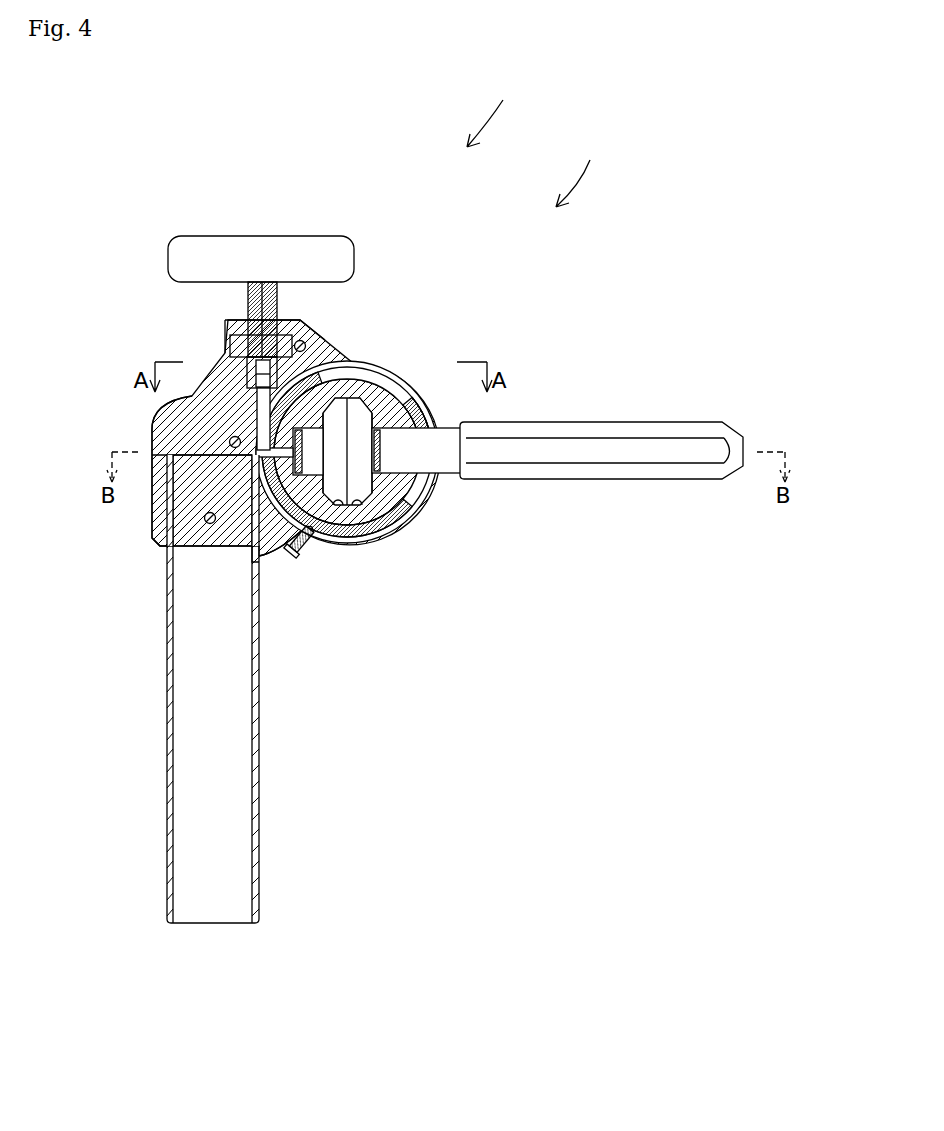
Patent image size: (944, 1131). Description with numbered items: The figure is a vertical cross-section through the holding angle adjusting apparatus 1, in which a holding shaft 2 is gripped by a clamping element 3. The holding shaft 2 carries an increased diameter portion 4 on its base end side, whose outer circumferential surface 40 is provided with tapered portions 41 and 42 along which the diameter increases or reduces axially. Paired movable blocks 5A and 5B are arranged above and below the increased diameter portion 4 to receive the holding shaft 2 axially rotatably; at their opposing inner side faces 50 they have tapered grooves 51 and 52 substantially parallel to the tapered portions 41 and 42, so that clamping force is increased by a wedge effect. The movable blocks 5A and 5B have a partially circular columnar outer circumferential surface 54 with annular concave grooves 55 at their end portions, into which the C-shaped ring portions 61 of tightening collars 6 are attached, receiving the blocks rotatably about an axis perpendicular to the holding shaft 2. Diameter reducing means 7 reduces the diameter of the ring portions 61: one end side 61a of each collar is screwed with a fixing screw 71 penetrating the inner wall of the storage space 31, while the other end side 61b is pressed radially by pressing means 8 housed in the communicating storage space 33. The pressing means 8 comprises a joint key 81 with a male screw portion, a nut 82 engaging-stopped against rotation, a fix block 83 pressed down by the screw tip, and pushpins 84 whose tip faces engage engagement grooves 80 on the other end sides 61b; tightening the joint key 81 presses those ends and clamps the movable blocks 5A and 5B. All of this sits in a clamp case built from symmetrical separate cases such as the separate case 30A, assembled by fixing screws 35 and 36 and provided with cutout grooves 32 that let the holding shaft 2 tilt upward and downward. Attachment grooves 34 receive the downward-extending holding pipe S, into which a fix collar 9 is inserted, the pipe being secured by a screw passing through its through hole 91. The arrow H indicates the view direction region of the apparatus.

The holding angle adjusting apparatus 1 is at (578, 172).
The holding shaft 2 is at (622, 428).
The clamping element 3 is at (373, 609).
The increased diameter portion 4 is at (353, 396).
The movable block 5A is at (390, 382).
The movable block 5B is at (380, 519).
The tightening collar 6 is at (430, 491).
The diameter reducing means 7 is at (221, 413).
The pressing means 8 is at (221, 311).
The fix collar 9 is at (213, 546).
The separate case 30A is at (151, 518).
The storage space 31 is at (398, 392).
The cutout groove 32 is at (402, 540).
The storage space 33 is at (268, 335).
The attachment groove 34 is at (173, 514).
The fixing screw 35 is at (301, 340).
The fixing screw 36 is at (254, 436).
The outer circumferential surface 40 is at (396, 387).
The tapered portion 41 is at (362, 404).
The tapered portion 42 is at (330, 408).
The inner side face 50 is at (352, 527).
The tapered groove 51 is at (357, 512).
The tapered groove 52 is at (338, 512).
The outer circumferential surface 54 is at (386, 500).
The annular concave groove 55 is at (418, 420).
The ring portion 61 is at (337, 408).
The one end side 61a is at (258, 548).
The other end side 61b is at (229, 442).
The fixing screw 71 is at (290, 560).
The engagement groove 80 is at (257, 400).
The joint key 81 is at (222, 250).
The nut 82 is at (237, 342).
The fix block 83 is at (233, 362).
The pushpin 84 is at (250, 405).
The through hole 91 is at (206, 524).
The head unit H is at (494, 115).
The holding pipe S is at (167, 777).